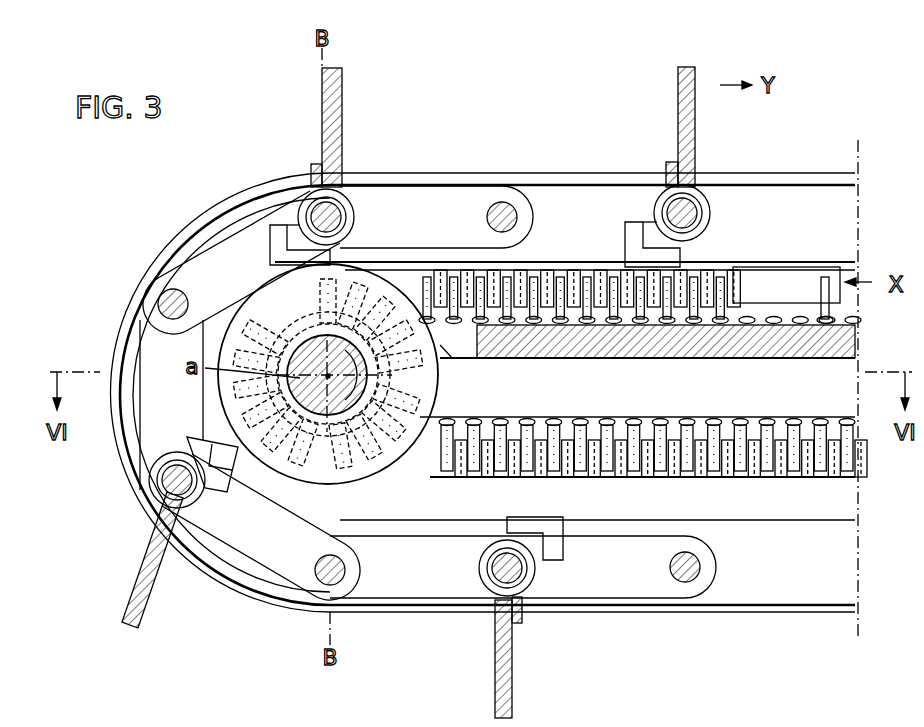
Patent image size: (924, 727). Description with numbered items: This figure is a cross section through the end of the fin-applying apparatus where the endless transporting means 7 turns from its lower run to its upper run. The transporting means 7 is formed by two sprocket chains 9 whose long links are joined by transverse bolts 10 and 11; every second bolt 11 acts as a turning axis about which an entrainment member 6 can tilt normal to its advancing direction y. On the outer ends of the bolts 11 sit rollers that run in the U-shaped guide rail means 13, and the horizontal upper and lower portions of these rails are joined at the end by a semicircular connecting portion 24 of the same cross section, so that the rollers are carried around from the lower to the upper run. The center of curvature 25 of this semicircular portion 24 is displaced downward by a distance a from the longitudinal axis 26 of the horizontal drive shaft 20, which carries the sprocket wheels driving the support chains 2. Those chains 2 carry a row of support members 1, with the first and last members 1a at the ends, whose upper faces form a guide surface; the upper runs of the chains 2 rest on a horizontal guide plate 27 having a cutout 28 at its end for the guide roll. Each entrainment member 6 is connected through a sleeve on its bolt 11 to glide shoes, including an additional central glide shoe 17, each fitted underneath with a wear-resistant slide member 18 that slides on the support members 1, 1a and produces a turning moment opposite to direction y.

The support member 1 is at (755, 462).
The first and last support member 1a is at (788, 282).
The support chain 2 is at (823, 462).
The entrainment member 6 is at (322, 120).
The endless transporting means 7 is at (795, 185).
The sprocket chain 9 is at (515, 205).
The transverse bolt 10 is at (702, 567).
The turning-axis bolt 11 is at (690, 213).
The guide rail means 13 is at (430, 185).
The additional glide shoe 17 is at (652, 236).
The slide member 18 is at (638, 258).
The drive shaft 20 is at (320, 347).
The semicircular connecting portion 24 is at (185, 238).
The center of curvature 25 is at (345, 392).
The longitudinal axis of drive shaft 26 is at (332, 377).
The guide plate 27 is at (845, 337).
The cutout 28 is at (440, 345).